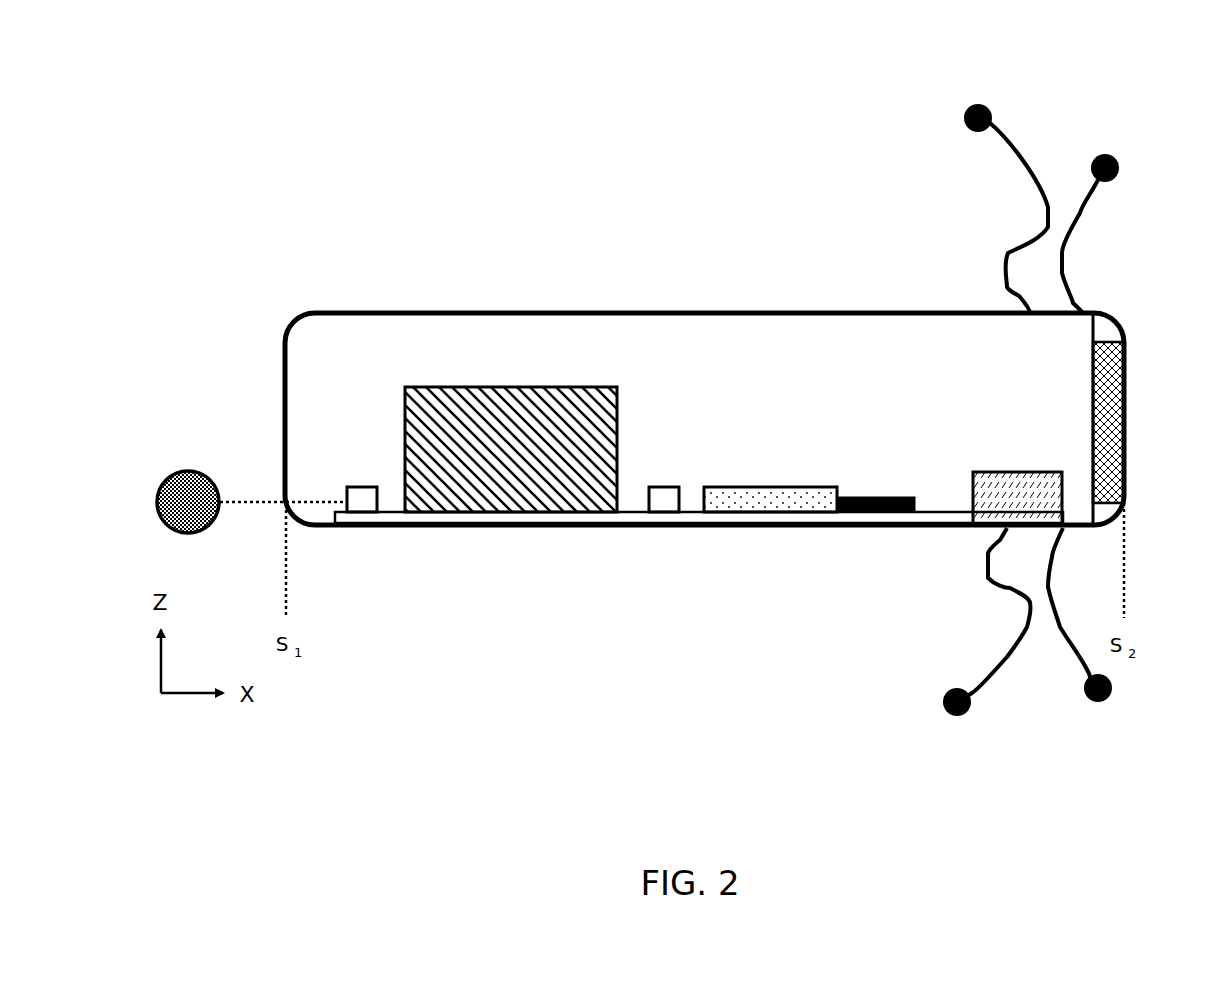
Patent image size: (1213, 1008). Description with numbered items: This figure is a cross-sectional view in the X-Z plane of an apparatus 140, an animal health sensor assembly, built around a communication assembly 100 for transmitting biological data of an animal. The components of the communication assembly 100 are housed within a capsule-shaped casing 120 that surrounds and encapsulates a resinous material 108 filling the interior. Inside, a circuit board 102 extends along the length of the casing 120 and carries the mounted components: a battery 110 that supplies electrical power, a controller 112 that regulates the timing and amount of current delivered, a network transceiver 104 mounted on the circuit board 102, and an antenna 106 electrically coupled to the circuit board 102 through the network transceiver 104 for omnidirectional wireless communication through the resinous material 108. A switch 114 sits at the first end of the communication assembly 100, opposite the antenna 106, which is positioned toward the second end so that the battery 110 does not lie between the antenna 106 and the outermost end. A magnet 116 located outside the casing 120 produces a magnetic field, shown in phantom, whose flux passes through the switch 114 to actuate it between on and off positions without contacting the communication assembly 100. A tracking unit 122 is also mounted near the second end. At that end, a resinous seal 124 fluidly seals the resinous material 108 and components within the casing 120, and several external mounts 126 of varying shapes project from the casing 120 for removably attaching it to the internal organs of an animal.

The communication assembly 100 is at (732, 458).
The circuit board 102 is at (457, 513).
The network transceiver 104 is at (735, 502).
The antenna 106 is at (862, 506).
The resinous material 108 is at (900, 398).
The battery 110 is at (553, 487).
The controller 112 is at (662, 502).
The switch 114 is at (363, 497).
The magnet 116 is at (195, 495).
The casing 120 is at (639, 310).
The tracking unit 122 is at (987, 508).
The resinous seal 124 is at (1107, 358).
The external mounts 126 is at (987, 103).
The apparatus 140 is at (282, 275).